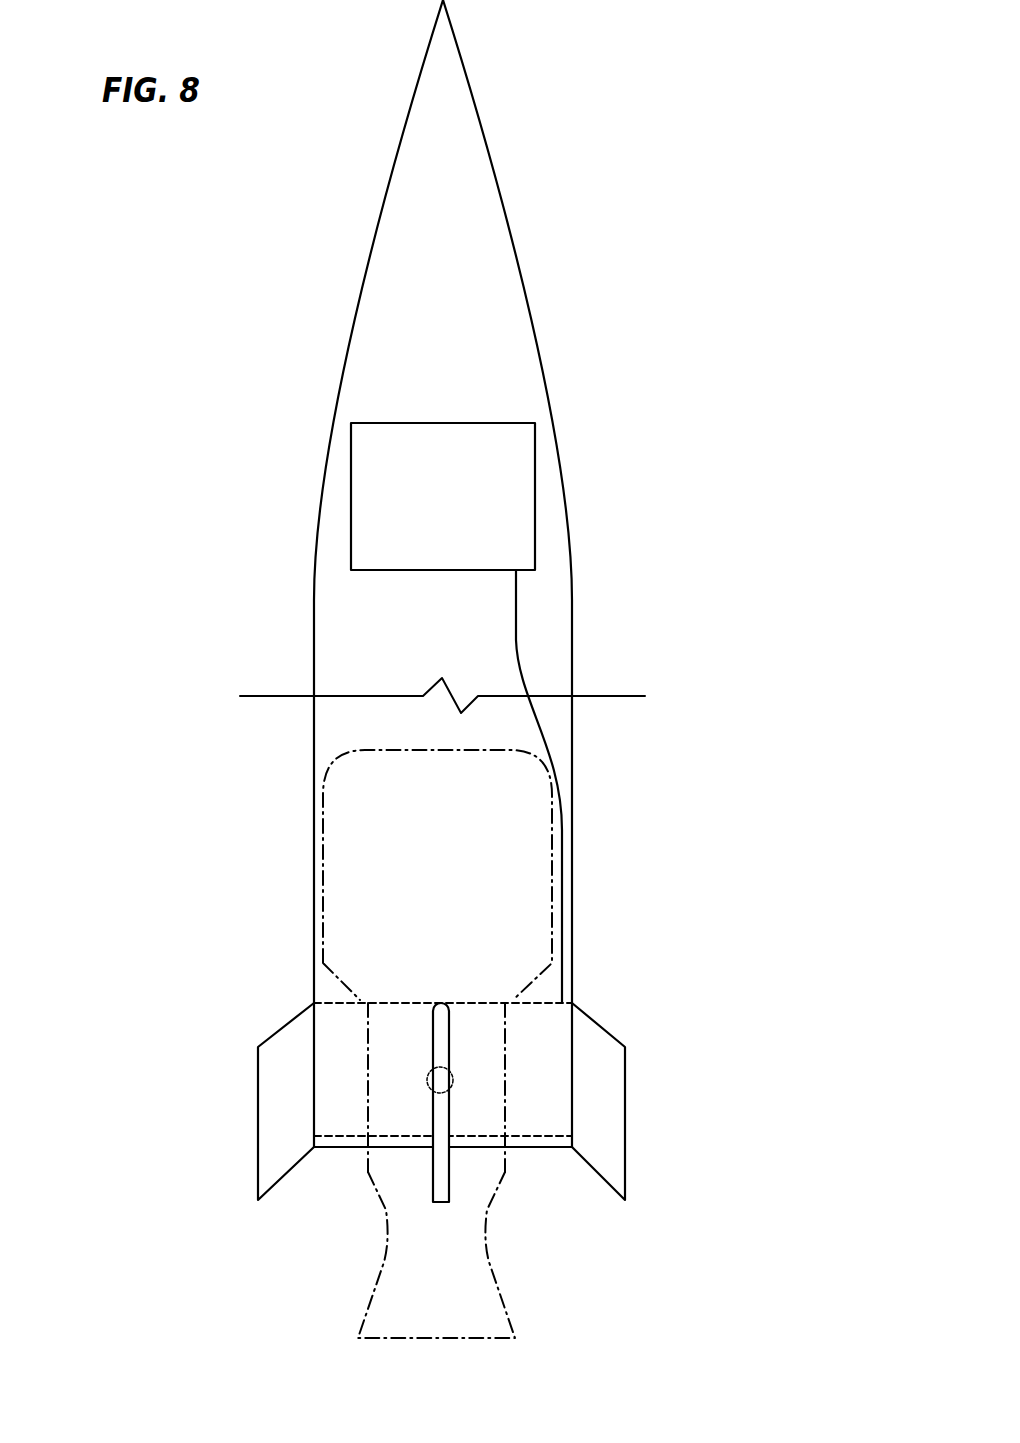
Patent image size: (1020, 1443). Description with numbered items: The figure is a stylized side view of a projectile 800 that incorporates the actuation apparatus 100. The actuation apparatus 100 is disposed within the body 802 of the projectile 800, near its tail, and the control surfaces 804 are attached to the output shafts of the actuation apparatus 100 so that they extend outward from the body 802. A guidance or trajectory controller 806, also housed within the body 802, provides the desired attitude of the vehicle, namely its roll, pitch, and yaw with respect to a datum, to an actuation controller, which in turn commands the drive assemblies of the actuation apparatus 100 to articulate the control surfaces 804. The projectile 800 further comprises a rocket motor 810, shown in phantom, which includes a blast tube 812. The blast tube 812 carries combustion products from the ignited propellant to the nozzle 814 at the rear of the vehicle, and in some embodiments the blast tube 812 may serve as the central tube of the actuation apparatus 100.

The projectile 800 is at (666, 172).
The body 802 is at (572, 602).
The control surfaces 804 is at (270, 1097).
The guidance or trajectory controller 806 is at (518, 473).
The rocket motor 810 is at (335, 875).
The blast tube 812 is at (505, 1072).
The nozzle 814 is at (503, 1307).
The actuation apparatus 100 is at (340, 1103).